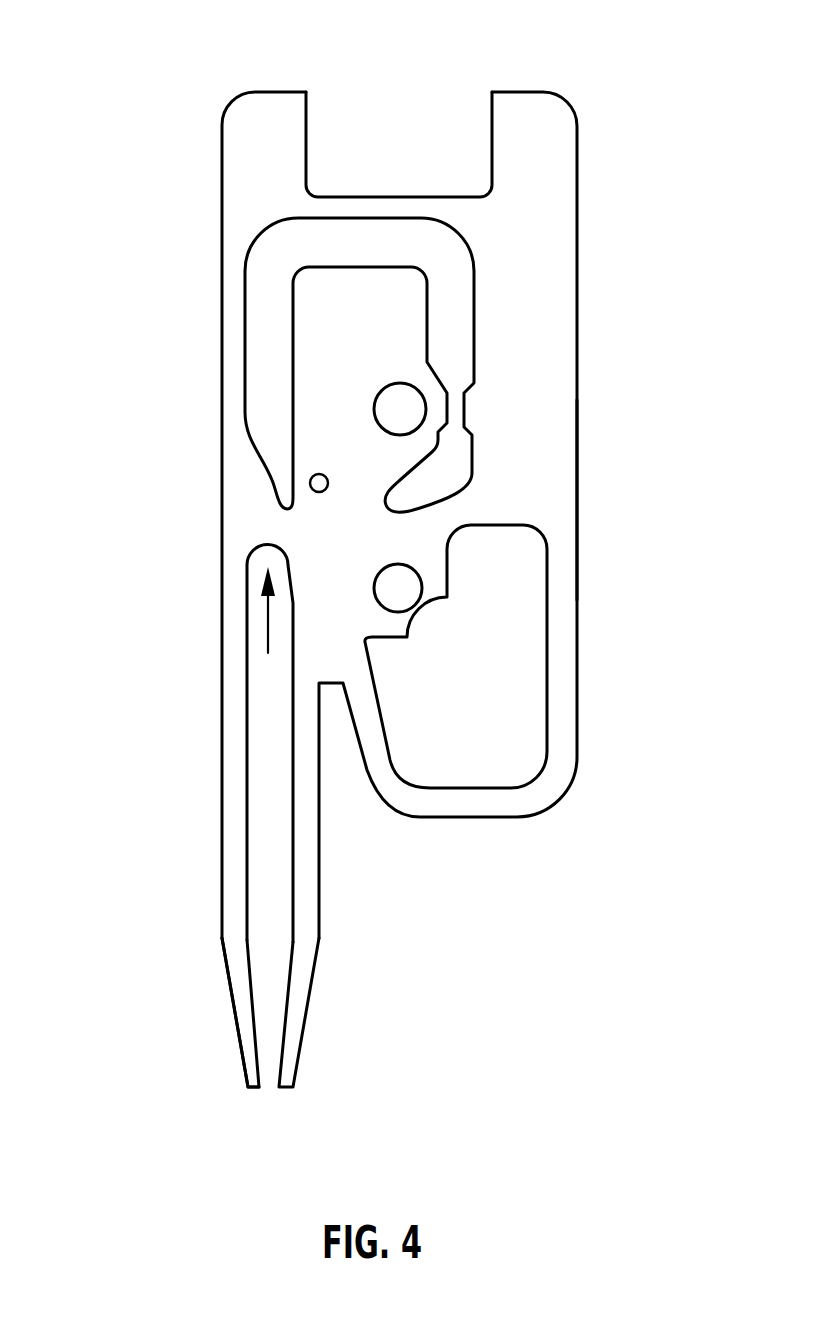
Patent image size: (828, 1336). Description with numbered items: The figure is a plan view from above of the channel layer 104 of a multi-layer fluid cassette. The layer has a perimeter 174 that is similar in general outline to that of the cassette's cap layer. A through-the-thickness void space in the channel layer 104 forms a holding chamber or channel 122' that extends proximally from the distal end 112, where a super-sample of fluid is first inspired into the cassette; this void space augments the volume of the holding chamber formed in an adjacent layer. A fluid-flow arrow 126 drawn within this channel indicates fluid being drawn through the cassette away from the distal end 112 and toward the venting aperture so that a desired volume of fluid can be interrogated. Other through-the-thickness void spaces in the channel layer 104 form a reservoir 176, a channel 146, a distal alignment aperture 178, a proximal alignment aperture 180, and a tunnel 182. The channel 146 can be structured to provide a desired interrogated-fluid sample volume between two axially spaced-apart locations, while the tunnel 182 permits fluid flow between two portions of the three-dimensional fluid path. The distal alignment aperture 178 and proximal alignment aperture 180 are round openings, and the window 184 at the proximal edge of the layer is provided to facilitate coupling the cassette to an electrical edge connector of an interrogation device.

The channel layer 104 is at (567, 398).
The distal end 112 is at (212, 1079).
The holding chamber or channel 122' is at (312, 989).
The fluid-flow arrow 126 is at (268, 615).
The channel 146 is at (259, 348).
The perimeter 174 is at (592, 508).
The reservoir 176 is at (518, 665).
The distal alignment aperture 178 is at (410, 596).
The proximal alignment aperture 180 is at (405, 407).
The tunnel 182 is at (318, 481).
The window 184 is at (395, 152).